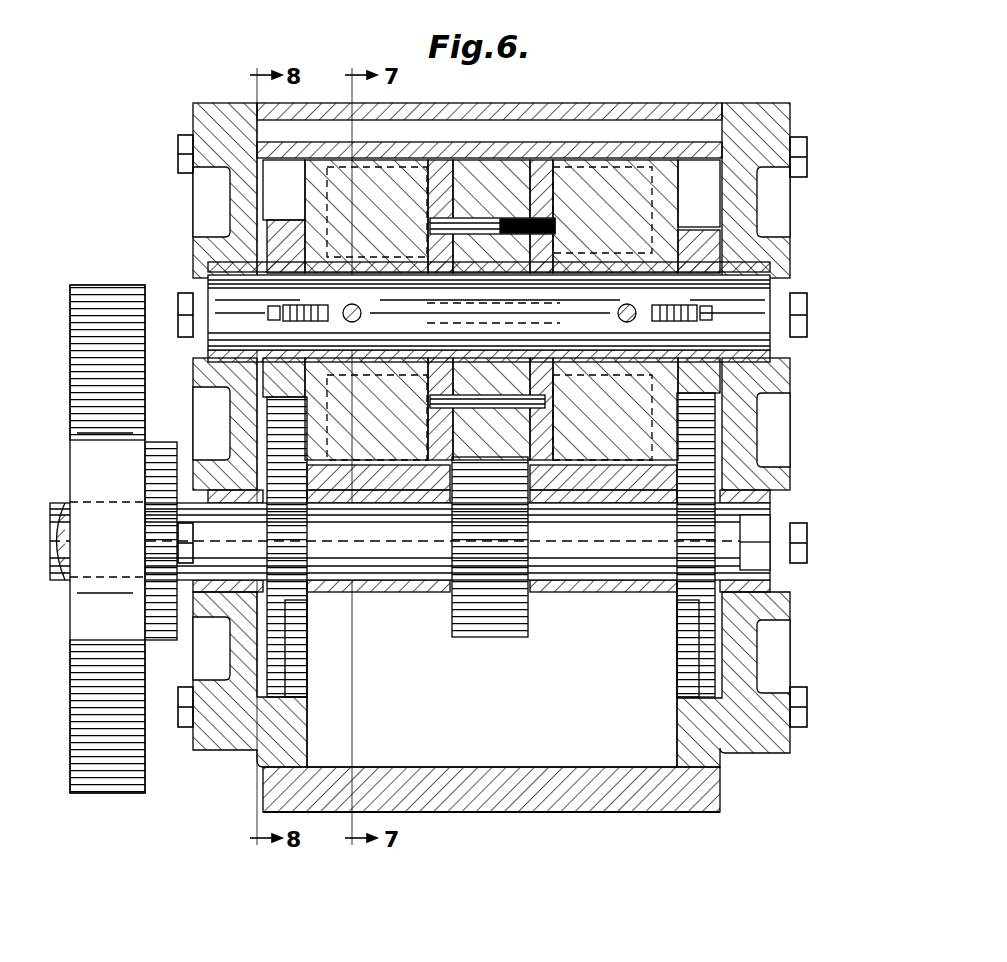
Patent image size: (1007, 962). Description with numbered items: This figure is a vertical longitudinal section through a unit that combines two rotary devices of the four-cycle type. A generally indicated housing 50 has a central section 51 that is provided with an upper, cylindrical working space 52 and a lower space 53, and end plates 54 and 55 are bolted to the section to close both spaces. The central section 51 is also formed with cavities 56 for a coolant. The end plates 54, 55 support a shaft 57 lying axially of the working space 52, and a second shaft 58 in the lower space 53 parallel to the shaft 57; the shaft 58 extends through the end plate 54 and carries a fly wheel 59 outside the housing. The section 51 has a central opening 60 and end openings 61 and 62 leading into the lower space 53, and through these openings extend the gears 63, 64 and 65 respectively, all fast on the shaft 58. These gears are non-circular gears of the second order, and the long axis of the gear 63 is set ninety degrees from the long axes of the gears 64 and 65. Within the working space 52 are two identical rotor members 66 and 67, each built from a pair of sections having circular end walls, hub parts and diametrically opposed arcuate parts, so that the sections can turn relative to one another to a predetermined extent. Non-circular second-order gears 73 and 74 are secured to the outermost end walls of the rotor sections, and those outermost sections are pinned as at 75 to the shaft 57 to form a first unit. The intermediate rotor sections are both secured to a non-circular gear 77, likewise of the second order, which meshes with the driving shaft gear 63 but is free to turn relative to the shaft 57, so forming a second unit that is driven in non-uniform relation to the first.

The housing 50 is at (532, 816).
The central section 51 is at (606, 800).
The upper cylindrical working space 52 is at (262, 178).
The lower space 53 is at (468, 762).
The end plate 54 is at (225, 715).
The end plate 55 is at (770, 725).
The cavities for a coolant 56 is at (680, 132).
The shaft 57 is at (745, 293).
The shaft 58 is at (610, 562).
The fly wheel 59 is at (104, 760).
The central opening 60 is at (445, 507).
The end opening 61 is at (312, 500).
The end opening 62 is at (665, 505).
The gear 63 is at (495, 605).
The gear 64 is at (290, 648).
The gear 65 is at (690, 648).
The rotor member 66 is at (398, 188).
The rotor member 67 is at (612, 188).
The non-circular gear 73 is at (290, 225).
The non-circular gear 74 is at (697, 230).
The pin 75 is at (270, 297).
The non-circular gear 77 is at (493, 182).